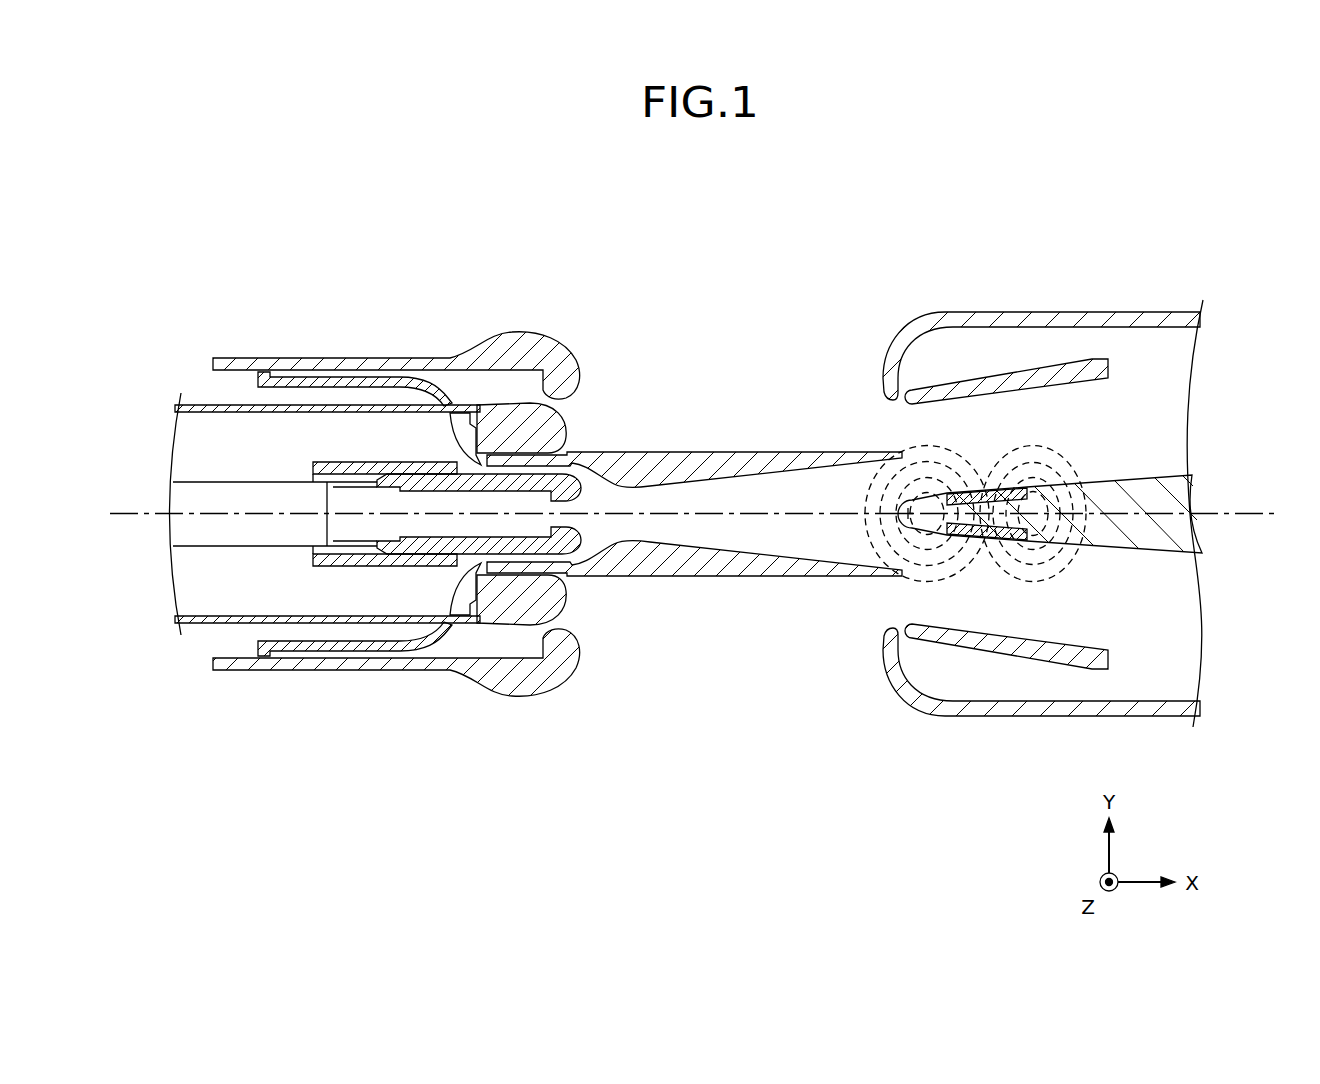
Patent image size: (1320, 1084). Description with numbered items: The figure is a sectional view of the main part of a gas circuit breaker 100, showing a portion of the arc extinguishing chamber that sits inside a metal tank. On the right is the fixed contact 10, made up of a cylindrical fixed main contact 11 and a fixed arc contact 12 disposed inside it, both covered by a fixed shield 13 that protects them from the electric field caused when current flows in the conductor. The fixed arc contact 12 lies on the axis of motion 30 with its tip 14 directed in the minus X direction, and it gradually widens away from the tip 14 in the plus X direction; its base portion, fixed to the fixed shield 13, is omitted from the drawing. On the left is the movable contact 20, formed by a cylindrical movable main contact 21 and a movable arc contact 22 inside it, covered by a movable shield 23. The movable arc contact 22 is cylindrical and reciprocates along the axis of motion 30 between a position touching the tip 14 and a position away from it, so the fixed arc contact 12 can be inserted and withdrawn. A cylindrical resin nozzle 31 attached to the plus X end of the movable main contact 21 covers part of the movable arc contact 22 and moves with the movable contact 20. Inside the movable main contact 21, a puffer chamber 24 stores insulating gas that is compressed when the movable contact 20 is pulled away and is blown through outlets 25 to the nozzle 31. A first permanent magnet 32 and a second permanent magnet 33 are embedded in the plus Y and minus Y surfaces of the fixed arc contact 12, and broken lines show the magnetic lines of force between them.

The gas circuit breaker 100 is at (980, 207).
The fixed contact 10 is at (1082, 250).
The fixed main contact 11 is at (1060, 362).
The fixed arc contact 12 is at (1128, 475).
The fixed shield 13 is at (983, 312).
The tip 14 is at (900, 513).
The movable contact 20 is at (595, 325).
The movable main contact 21 is at (560, 428).
The movable arc contact 22 is at (575, 474).
The movable shield 23 is at (512, 335).
The puffer chamber 24 is at (330, 437).
The outlets 25 is at (455, 432).
The axis of motion 30 is at (1148, 512).
The nozzle 31 is at (708, 452).
The first permanent magnet 32 is at (980, 492).
The second permanent magnet 33 is at (983, 540).